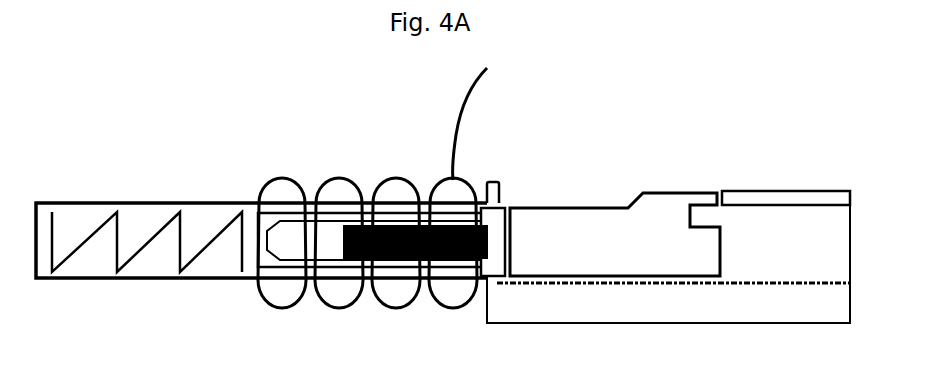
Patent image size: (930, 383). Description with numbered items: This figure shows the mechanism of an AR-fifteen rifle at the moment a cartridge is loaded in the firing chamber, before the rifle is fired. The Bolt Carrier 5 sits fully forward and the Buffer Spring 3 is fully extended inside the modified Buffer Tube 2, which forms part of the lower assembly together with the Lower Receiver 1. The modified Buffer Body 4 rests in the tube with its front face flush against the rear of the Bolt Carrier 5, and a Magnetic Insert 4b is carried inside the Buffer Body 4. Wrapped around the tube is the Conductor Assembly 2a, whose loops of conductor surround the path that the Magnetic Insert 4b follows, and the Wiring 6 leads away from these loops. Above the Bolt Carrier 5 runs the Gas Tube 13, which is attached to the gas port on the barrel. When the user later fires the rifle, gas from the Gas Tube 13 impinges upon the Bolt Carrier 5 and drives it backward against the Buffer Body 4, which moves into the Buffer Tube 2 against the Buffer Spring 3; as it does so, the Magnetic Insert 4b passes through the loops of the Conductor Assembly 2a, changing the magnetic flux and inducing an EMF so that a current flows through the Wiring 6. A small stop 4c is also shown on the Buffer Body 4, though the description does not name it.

The Lower Receiver 1 is at (668, 264).
The Buffer Tube 2 is at (107, 287).
The Conductor Assembly 2a is at (286, 164).
The Buffer Spring 3 is at (144, 232).
The Buffer Body 4 is at (381, 242).
The Magnetic Insert 4b is at (415, 242).
The plunger stop pin 4c is at (520, 196).
The Bolt Carrier 5 is at (615, 234).
The Wiring 6 is at (454, 122).
The Gas Tube 13 is at (786, 174).